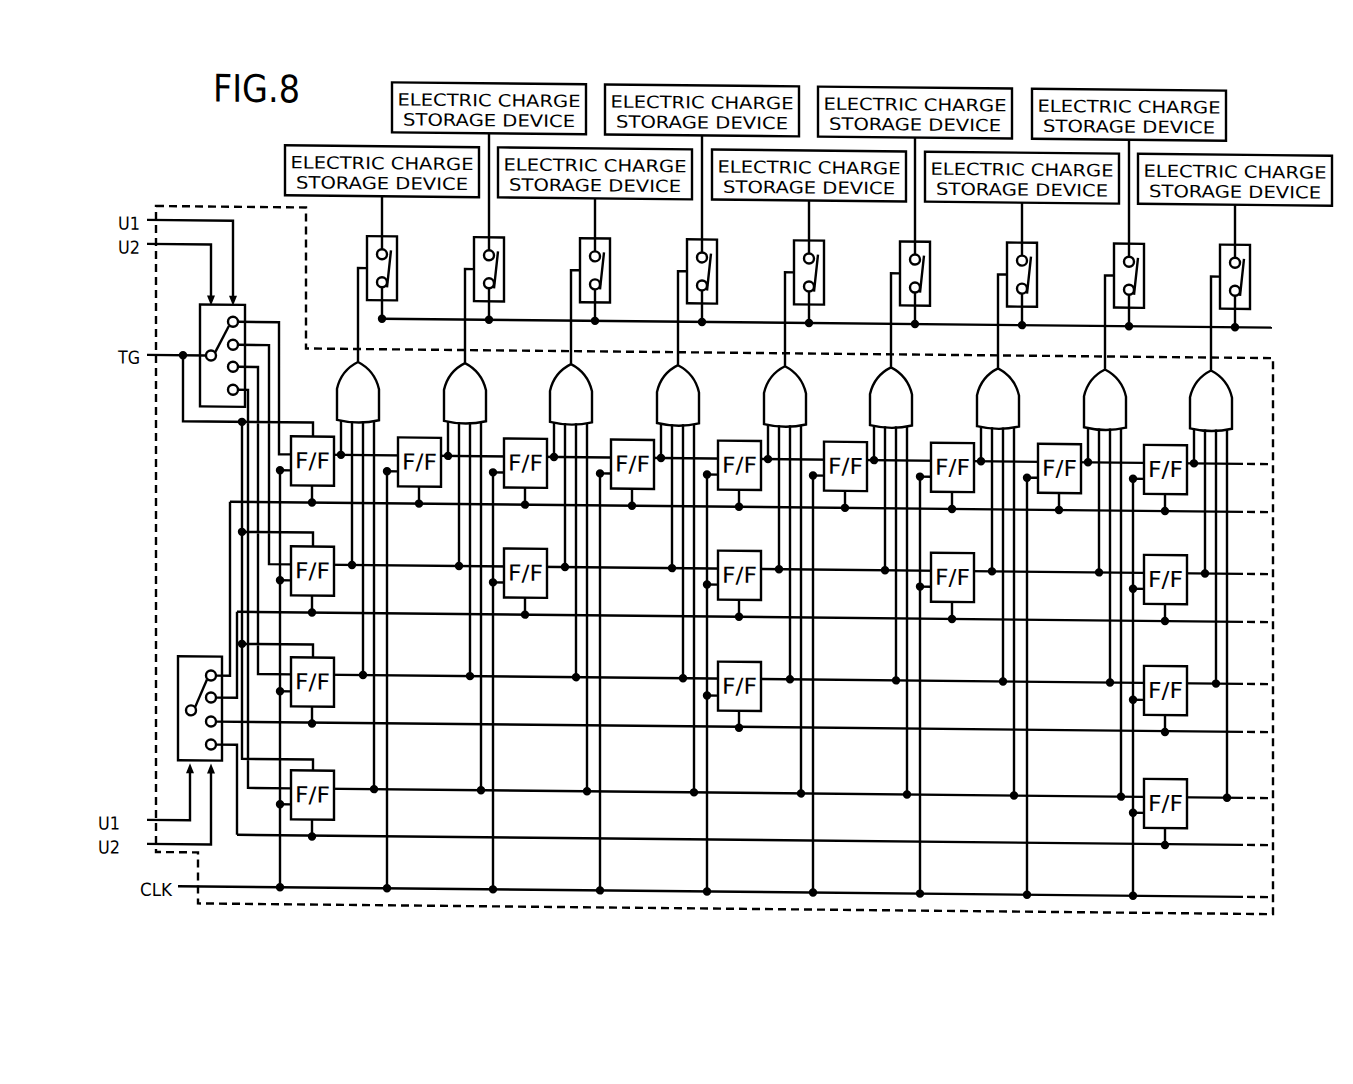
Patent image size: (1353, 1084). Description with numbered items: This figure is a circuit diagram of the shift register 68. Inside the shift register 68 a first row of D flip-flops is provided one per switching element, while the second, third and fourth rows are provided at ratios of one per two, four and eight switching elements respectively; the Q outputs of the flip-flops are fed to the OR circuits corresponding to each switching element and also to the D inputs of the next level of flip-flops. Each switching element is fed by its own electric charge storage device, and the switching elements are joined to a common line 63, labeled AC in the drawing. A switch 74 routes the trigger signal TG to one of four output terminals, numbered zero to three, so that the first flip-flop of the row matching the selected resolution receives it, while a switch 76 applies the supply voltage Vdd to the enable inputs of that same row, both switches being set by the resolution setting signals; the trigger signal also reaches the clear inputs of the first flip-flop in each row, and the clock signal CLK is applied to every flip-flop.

The AC bus line 63 is at (1190, 318).
The shift register 68 is at (207, 208).
The switch 74 is at (200, 333).
The switch 76 is at (218, 765).